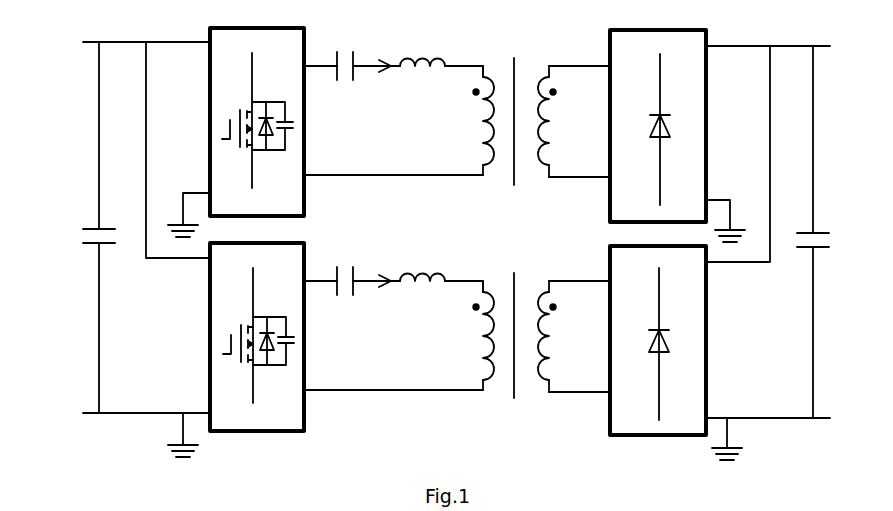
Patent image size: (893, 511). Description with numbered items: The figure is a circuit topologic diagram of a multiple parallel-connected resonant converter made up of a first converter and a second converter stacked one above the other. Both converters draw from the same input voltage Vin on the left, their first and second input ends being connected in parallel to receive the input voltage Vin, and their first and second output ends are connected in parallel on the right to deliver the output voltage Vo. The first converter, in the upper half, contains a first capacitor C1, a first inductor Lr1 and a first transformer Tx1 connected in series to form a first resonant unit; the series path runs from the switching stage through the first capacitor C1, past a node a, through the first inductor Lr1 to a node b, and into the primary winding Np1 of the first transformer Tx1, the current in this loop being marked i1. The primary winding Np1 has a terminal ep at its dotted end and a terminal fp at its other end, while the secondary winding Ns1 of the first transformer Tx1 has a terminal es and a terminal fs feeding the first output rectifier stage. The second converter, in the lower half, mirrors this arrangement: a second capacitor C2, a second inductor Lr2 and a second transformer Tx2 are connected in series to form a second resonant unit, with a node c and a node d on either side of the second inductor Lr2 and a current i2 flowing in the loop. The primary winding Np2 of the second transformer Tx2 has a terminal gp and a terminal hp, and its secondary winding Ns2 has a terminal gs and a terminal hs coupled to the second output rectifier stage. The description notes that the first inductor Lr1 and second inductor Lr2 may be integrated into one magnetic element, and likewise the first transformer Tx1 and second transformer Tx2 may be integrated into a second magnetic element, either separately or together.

The input voltage Vin is at (74, 242).
The output voltage Vo is at (826, 232).
The first capacitor C1 is at (344, 56).
The second capacitor C2 is at (342, 293).
The first inductor Lr1 is at (422, 43).
The second inductor Lr2 is at (422, 259).
The first transformer Tx1 is at (513, 101).
The second transformer Tx2 is at (513, 316).
The primary winding of the first transformer Np1 is at (470, 121).
The secondary winding of the first transformer Ns1 is at (559, 121).
The primary winding of the second transformer Np2 is at (470, 336).
The secondary winding of the second transformer Ns2 is at (559, 336).
The first resonant current i1 is at (381, 85).
The second resonant current i2 is at (381, 300).
The node a is at (376, 48).
The node b is at (455, 49).
The node c is at (377, 262).
The node d is at (455, 264).
The terminal ep is at (465, 82).
The terminal fp is at (467, 160).
The terminal es is at (562, 80).
The terminal fs is at (561, 162).
The terminal gp is at (465, 295).
The terminal hp is at (466, 374).
The terminal gs is at (563, 295).
The terminal hs is at (565, 376).